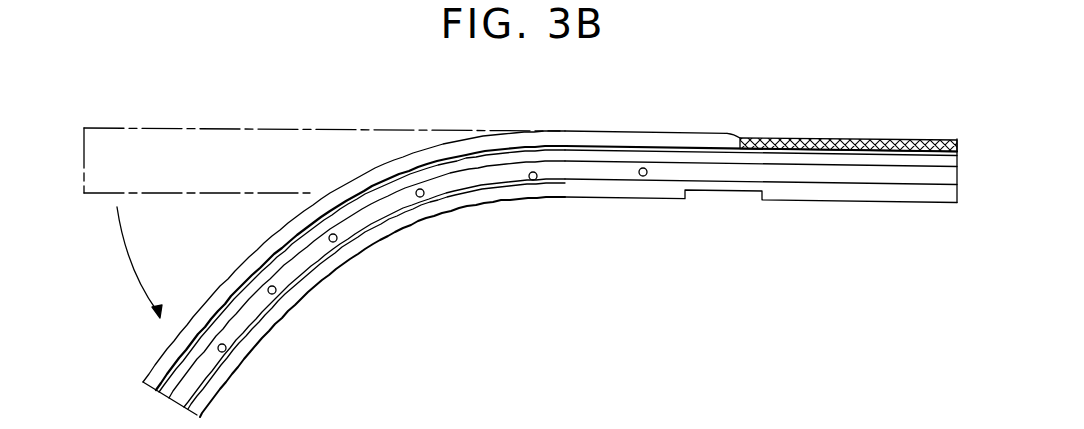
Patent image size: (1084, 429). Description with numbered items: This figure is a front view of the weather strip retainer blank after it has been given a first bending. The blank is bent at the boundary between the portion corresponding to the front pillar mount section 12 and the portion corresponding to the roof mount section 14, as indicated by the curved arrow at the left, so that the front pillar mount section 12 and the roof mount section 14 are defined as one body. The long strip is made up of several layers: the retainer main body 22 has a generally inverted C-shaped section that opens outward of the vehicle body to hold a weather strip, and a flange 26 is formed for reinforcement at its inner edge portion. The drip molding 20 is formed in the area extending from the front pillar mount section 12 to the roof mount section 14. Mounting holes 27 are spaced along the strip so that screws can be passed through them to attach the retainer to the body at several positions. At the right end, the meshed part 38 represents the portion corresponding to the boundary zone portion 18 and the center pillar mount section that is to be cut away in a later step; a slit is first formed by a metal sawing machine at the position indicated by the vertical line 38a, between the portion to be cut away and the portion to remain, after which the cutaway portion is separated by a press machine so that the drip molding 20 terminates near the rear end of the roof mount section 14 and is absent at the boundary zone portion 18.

The front pillar mount section 12 is at (247, 260).
The roof mount section 14 is at (593, 130).
The boundary zone portion 18 is at (722, 196).
The drip molding 20 is at (346, 184).
The retainer main body 22 is at (371, 216).
The flange 26 is at (307, 284).
The mounting holes 27 is at (529, 180).
The meshed part 38 is at (866, 138).
The vertical line 38a is at (734, 137).